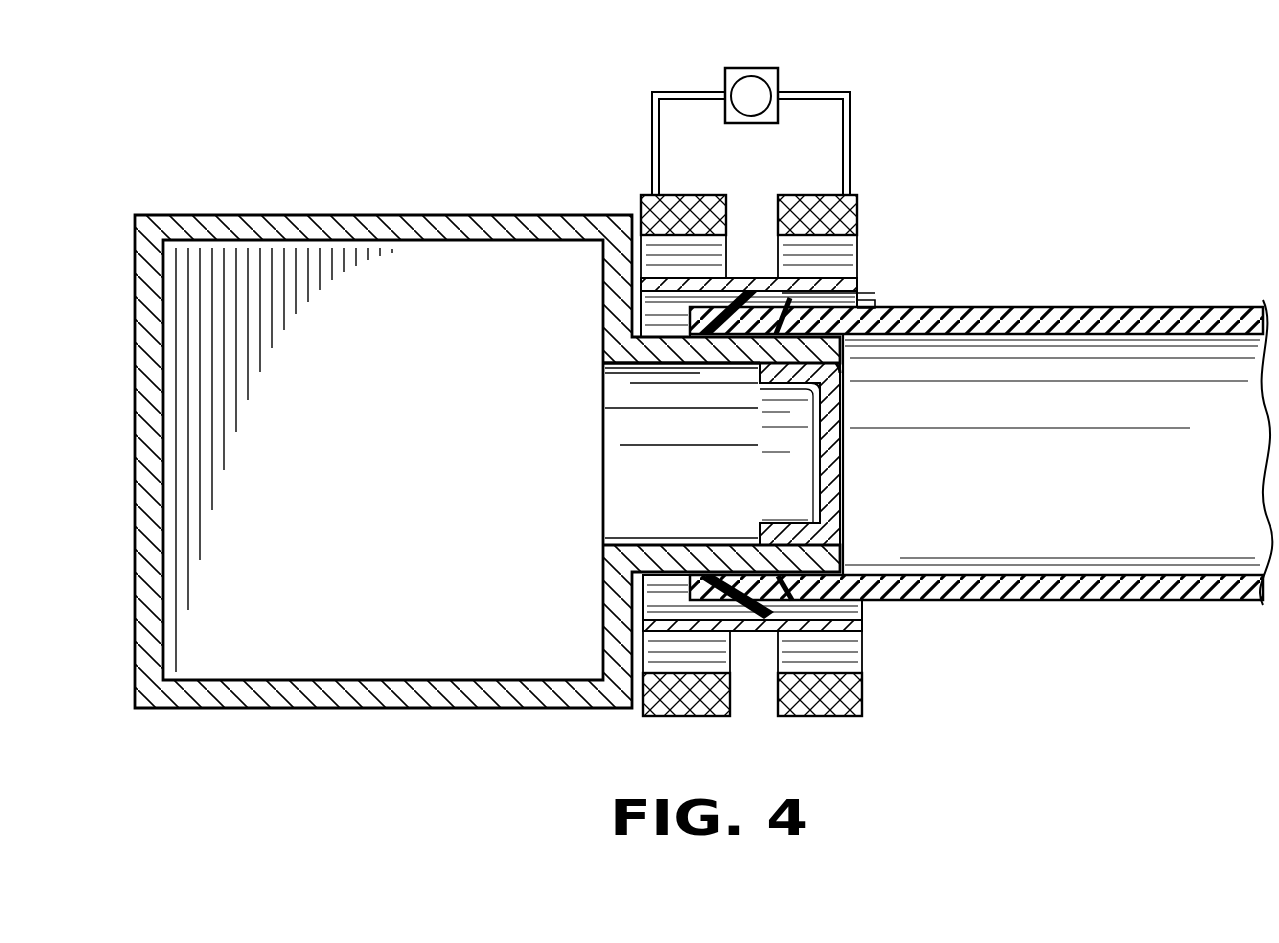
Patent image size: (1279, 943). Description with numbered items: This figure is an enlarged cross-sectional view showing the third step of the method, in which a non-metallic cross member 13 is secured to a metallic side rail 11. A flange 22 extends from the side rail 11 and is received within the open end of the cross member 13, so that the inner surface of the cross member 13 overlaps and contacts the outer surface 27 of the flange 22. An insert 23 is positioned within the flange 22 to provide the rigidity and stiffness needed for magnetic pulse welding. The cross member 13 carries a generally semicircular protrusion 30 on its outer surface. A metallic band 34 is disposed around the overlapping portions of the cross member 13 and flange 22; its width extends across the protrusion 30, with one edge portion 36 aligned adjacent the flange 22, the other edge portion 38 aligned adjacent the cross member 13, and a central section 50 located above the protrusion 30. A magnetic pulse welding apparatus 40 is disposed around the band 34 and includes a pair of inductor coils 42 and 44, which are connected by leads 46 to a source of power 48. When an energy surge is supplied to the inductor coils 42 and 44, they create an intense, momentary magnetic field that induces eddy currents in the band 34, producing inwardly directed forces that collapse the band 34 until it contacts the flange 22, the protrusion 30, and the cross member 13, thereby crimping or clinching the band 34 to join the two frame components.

The side rail 11 is at (356, 209).
The cross member 13 is at (1168, 303).
The flange 22 is at (649, 370).
The insert 23 is at (841, 459).
The outer surface 27 is at (648, 578).
The protrusion 30 is at (858, 293).
The metallic band 34 is at (817, 634).
The edge portion 36 is at (657, 281).
The edge portion 38 is at (857, 278).
The magnetic pulse welding apparatus 40 is at (773, 141).
The inductor coil 42 is at (660, 213).
The inductor coil 44 is at (847, 212).
The leads 46 is at (682, 92).
The source of power 48 is at (770, 77).
The central section 50 is at (757, 277).